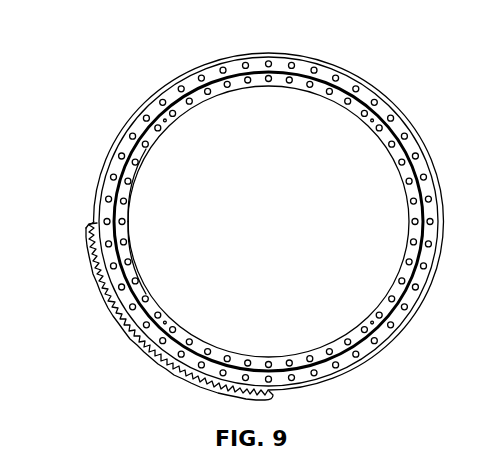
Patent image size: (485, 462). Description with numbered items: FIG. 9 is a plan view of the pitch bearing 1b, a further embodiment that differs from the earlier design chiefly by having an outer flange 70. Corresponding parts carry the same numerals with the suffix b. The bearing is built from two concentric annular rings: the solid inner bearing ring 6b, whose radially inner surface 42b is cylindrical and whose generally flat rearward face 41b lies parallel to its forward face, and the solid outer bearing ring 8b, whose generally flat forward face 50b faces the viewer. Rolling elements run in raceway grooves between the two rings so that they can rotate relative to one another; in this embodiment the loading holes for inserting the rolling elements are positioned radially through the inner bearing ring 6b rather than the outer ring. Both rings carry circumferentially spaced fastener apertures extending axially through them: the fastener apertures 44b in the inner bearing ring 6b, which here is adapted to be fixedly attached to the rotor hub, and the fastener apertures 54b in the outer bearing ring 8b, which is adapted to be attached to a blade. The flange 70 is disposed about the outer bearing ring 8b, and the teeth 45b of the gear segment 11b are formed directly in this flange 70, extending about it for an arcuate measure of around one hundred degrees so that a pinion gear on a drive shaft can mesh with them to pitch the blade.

The pitch bearing 1b is at (174, 54).
The outer flange 70 is at (96, 192).
The outer bearing ring 8b is at (134, 127).
The fastener apertures 54b is at (243, 61).
The forward face 50b is at (365, 97).
The rearward face 41b is at (241, 84).
The fastener apertures 44b is at (188, 104).
The inner bearing ring 6b is at (136, 169).
The inner surface 42b is at (139, 272).
The teeth 45b is at (92, 220).
The gear segment 11b is at (118, 331).